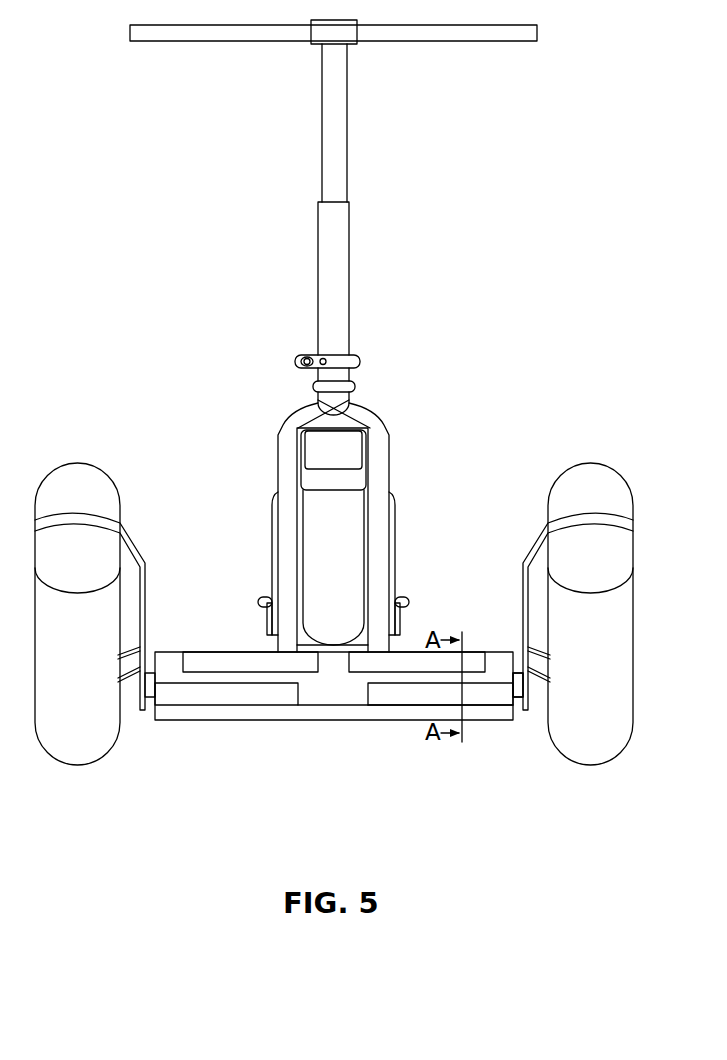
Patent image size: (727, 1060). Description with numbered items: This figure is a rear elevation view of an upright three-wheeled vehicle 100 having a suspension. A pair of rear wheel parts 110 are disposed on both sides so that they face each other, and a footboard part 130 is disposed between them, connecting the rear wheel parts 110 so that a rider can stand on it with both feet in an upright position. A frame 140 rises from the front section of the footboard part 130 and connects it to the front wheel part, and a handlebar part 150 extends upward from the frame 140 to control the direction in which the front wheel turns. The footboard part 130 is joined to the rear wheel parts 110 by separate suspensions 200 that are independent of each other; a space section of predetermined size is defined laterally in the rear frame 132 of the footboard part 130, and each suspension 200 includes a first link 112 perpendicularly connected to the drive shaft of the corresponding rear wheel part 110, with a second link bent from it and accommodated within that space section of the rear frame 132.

The upright three-wheeled vehicle 100 is at (544, 233).
The rear wheel part 110 is at (78, 747).
The first link 112 is at (527, 707).
The footboard part 130 is at (229, 643).
The rear frame 132 is at (335, 713).
The frame 140 is at (278, 418).
The handlebar part 150 is at (335, 183).
The suspension 200 is at (394, 709).